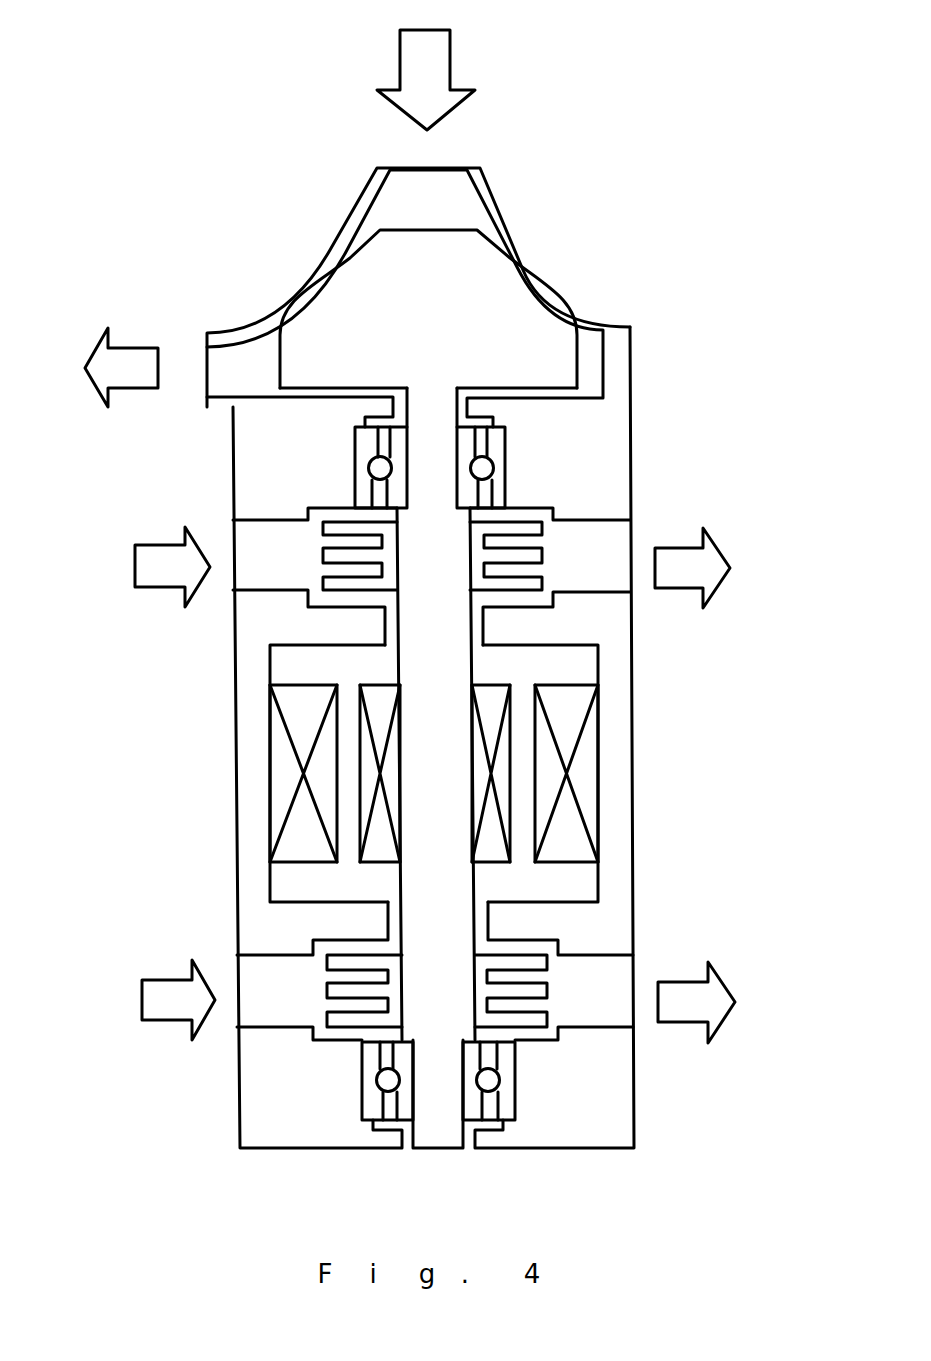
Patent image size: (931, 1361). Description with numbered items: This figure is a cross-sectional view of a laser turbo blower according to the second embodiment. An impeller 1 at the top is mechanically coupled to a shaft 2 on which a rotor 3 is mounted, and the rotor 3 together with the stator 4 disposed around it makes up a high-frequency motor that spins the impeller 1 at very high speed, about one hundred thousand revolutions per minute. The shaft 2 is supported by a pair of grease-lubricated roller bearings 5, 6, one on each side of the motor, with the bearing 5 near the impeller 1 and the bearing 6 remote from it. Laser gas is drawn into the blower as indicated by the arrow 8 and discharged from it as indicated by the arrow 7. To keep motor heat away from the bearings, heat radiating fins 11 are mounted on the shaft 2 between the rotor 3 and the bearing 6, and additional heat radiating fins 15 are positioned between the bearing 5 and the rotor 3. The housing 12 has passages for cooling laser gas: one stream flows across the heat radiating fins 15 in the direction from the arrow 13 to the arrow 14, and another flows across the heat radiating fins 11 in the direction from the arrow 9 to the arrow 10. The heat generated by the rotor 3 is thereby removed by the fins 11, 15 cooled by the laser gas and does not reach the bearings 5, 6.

The impeller 1 is at (533, 290).
The shaft 2 is at (442, 1148).
The rotor 3 is at (492, 853).
The stator 4 is at (582, 762).
The roller bearing 5 is at (505, 431).
The roller bearing 6 is at (515, 1102).
The arrow 7 is at (132, 348).
The arrow 8 is at (453, 73).
The arrow 9 is at (160, 978).
The arrow 10 is at (680, 982).
The heat radiating fins 11 is at (547, 1020).
The housing 12 is at (235, 768).
The arrow 13 is at (157, 545).
The arrow 14 is at (673, 548).
The heat radiating fins 15 is at (542, 590).